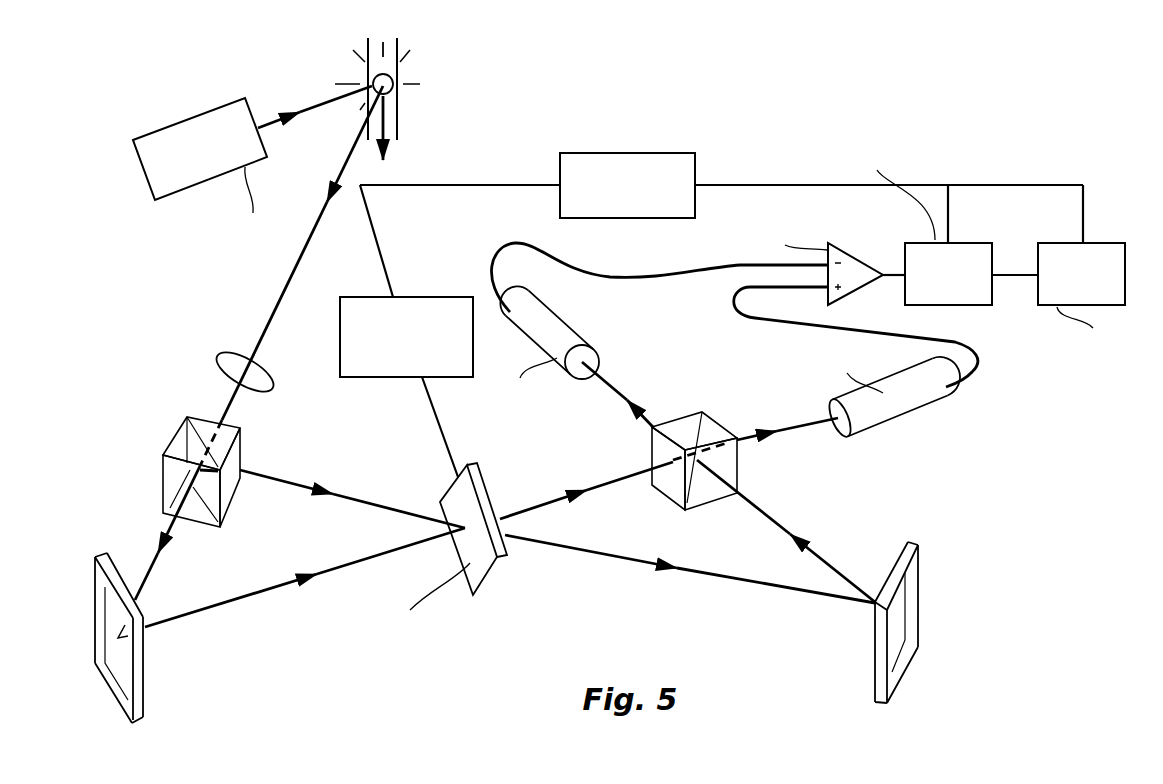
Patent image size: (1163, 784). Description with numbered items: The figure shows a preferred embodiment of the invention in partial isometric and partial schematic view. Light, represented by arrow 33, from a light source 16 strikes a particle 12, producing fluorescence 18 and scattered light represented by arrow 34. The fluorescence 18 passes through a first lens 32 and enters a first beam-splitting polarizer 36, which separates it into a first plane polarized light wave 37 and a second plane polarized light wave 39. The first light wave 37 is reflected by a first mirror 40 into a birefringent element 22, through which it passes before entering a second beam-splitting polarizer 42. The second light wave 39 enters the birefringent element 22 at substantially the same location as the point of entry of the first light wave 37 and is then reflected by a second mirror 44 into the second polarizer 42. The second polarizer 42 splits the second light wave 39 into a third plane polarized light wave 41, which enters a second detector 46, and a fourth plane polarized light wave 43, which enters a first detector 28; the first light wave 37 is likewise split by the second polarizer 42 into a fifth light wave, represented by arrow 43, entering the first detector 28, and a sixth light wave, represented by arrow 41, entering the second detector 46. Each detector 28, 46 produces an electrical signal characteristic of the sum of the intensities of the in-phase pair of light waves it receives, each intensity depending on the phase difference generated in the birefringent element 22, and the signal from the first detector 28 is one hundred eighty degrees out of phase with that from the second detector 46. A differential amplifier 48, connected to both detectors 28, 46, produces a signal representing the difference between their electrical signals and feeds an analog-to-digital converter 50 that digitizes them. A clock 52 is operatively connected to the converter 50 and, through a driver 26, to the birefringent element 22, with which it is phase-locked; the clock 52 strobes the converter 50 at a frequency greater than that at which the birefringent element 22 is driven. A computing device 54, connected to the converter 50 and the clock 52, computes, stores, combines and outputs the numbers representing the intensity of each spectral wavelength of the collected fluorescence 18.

The particle 12 is at (395, 57).
The light source 16 is at (188, 164).
The fluorescence 18 is at (403, 84).
The birefringent element 22 is at (502, 573).
The driver 26 is at (396, 367).
The first detector 28 is at (890, 427).
The first lens 32 is at (222, 353).
The arrow representing light 33 is at (300, 107).
The arrow representing scattered light 34 is at (407, 105).
The first beam-splitting polarizer 36 is at (177, 433).
The first plane polarized light wave 37 is at (167, 550).
The second plane polarized light wave 39 is at (330, 493).
The first mirror 40 is at (147, 690).
The third plane polarized light wave 41 is at (633, 393).
The second beam-splitting polarizer 42 is at (680, 503).
The fourth plane polarized light wave 43 is at (772, 440).
The second mirror 44 is at (920, 600).
The second detector 46 is at (573, 327).
The differential amplifier 48 is at (840, 247).
The analog-to-digital converter 50 is at (936, 291).
The clock 52 is at (617, 214).
The computing device 54 is at (1070, 291).